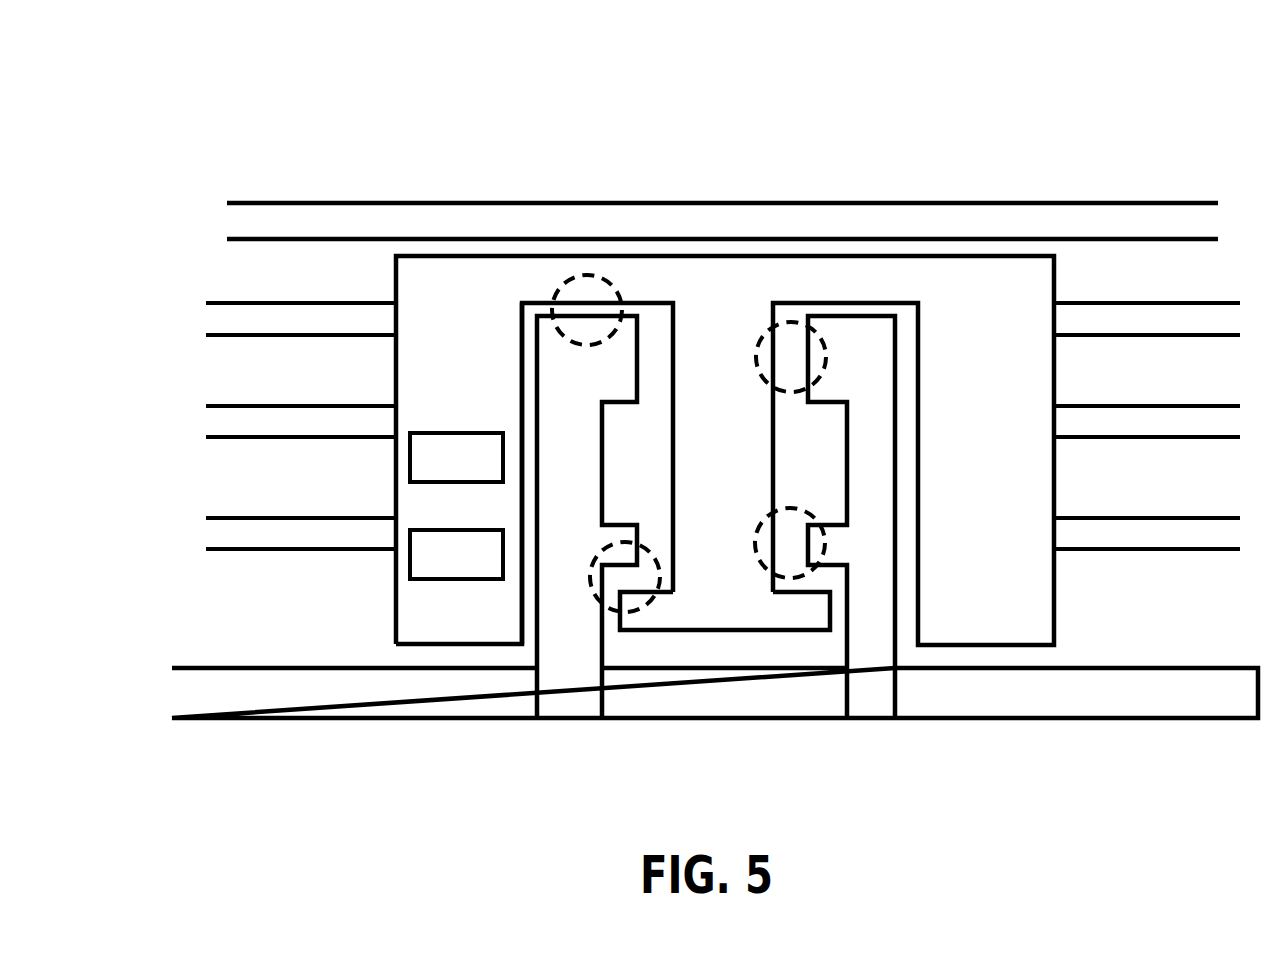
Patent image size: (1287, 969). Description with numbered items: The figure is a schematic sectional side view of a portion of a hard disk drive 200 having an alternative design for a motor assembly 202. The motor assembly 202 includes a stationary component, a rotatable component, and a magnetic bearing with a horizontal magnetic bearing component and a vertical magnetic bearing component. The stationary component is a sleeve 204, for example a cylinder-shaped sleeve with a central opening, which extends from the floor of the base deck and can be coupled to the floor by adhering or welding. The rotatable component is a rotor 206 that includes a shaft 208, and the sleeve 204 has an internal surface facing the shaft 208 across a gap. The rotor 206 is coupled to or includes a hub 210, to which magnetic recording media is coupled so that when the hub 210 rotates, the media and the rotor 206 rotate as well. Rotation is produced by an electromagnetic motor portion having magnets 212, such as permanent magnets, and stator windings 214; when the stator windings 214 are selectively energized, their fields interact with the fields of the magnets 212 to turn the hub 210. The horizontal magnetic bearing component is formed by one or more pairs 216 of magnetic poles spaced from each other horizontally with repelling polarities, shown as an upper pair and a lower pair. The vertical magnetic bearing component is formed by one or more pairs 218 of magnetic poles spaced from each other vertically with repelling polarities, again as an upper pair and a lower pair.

The hard disk drive 200 is at (215, 152).
The motor assembly 202 is at (875, 187).
The sleeve 204 is at (593, 483).
The rotor 206 is at (1037, 390).
The shaft 208 is at (750, 481).
The hub 210 is at (478, 376).
The magnets 212 is at (456, 457).
The stator windings 214 is at (456, 554).
The pairs of magnetic poles 216 is at (762, 342).
The pairs of magnetic poles 218 is at (583, 275).